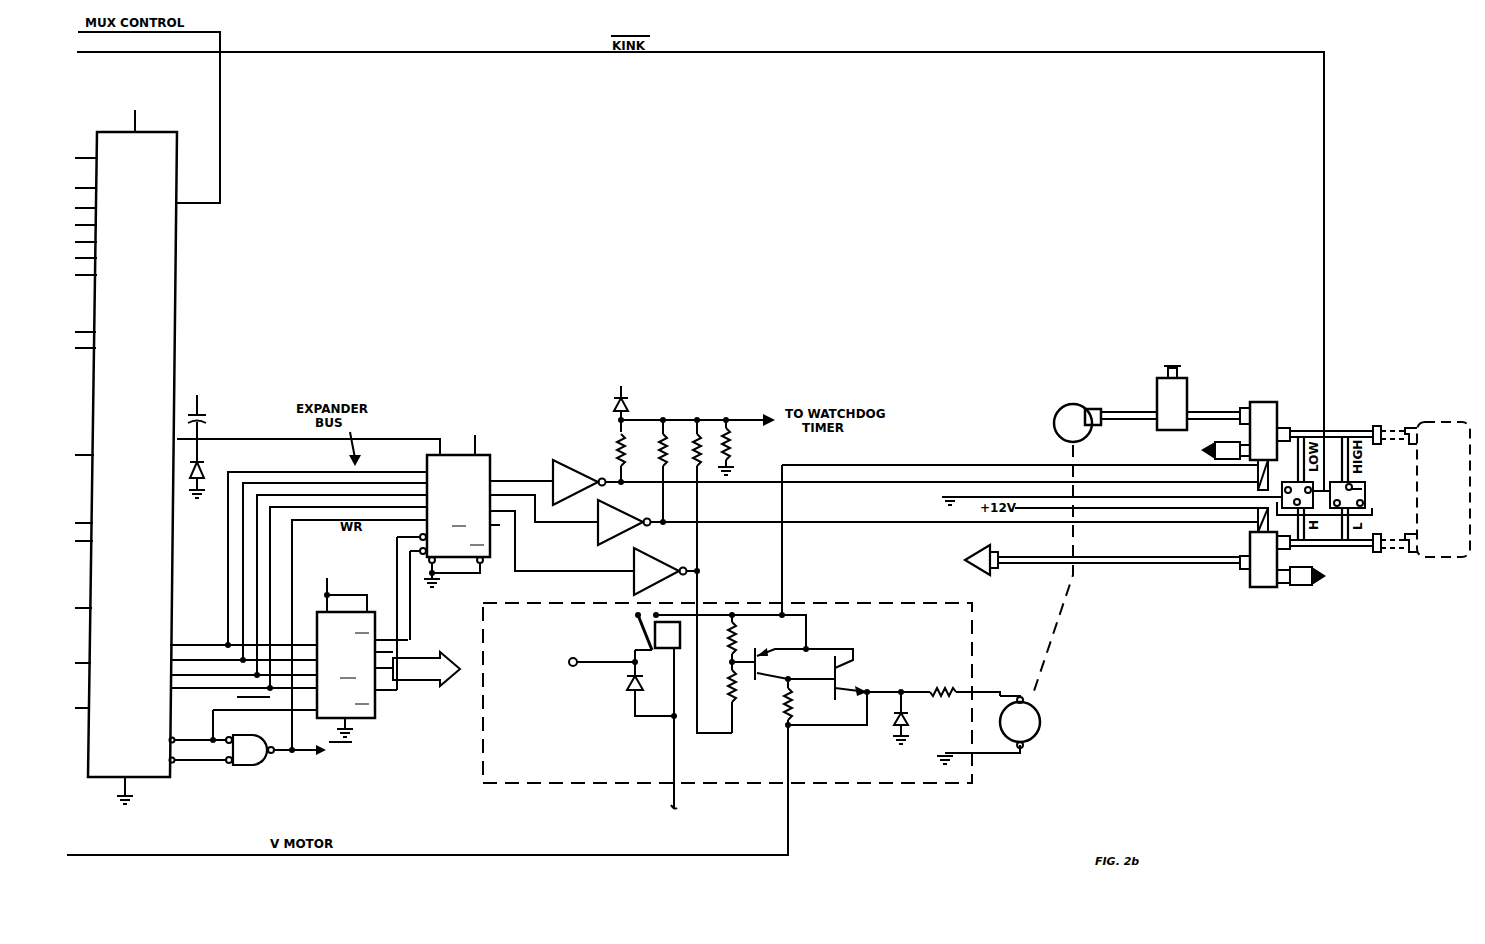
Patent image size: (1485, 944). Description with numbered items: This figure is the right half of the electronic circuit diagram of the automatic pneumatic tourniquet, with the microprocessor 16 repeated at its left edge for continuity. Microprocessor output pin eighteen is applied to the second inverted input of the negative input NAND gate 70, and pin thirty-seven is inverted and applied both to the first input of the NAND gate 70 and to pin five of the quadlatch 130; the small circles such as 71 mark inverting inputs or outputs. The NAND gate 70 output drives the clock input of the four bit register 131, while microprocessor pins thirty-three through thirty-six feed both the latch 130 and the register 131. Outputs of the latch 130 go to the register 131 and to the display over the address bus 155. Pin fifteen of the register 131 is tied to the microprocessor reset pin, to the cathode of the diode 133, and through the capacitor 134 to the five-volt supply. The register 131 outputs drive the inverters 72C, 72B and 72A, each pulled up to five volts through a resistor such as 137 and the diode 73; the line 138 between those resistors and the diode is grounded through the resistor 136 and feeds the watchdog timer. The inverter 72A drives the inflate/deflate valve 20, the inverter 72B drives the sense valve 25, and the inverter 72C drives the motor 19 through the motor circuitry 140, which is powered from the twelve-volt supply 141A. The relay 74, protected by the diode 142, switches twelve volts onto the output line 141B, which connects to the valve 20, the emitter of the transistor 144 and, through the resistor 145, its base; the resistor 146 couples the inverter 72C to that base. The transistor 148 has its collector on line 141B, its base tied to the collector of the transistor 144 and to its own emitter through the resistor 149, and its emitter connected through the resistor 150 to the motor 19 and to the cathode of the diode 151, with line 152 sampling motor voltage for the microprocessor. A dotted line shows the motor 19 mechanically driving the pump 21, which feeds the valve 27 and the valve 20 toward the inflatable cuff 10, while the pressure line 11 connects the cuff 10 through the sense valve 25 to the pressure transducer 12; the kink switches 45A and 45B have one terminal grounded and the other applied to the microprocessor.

The microprocessor 16 is at (177, 278).
The capacitor 134 is at (205, 410).
The diode 133 is at (204, 474).
The four bit register 131 is at (436, 455).
The quadlatch 130 is at (377, 712).
The address bus 155 is at (430, 656).
The negative input NAND gate 70 is at (262, 768).
The small circle 71 is at (233, 763).
The inverter 72A is at (558, 460).
The inverter 72B is at (608, 503).
The inverter 72C is at (644, 553).
The diode 73 is at (628, 404).
The resistor 137 is at (665, 435).
The line 138 is at (706, 418).
The resistor 136 is at (735, 457).
The motor circuitry 140 is at (857, 786).
The 12-volt power supply 141A is at (576, 667).
The relay output line 141B is at (784, 608).
The relay 74 is at (643, 630).
The diode 142 is at (628, 686).
The resistor 145 is at (730, 624).
The resistor 146 is at (722, 700).
The transistor 144 is at (766, 682).
The transistor 148 is at (848, 678).
The resistor 149 is at (791, 720).
The resistor 150 is at (943, 690).
The diode 151 is at (893, 726).
The line 152 is at (790, 852).
The motor 19 is at (1028, 745).
The pump 21 is at (1062, 410).
The valve 27 is at (1157, 392).
The inflate/deflate valve 20 is at (1278, 410).
The kink switch 45A is at (1365, 490).
The kink switch 45B is at (1305, 508).
The sense valve 25 is at (1250, 576).
The pressure transducer 12 is at (962, 557).
The pressure line 11 is at (1118, 565).
The inflatable cuff 10 is at (1450, 420).